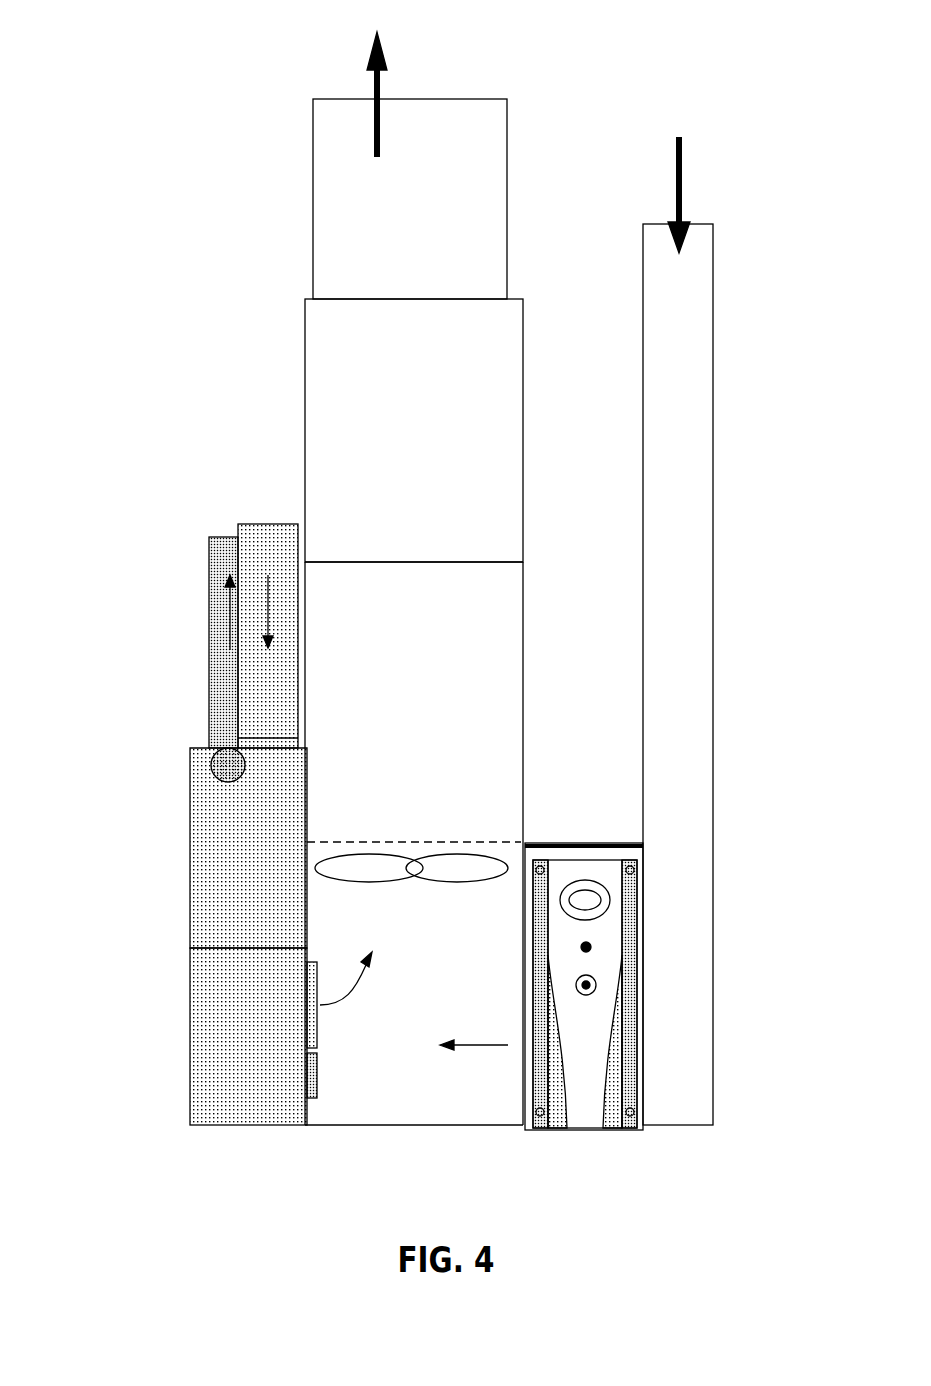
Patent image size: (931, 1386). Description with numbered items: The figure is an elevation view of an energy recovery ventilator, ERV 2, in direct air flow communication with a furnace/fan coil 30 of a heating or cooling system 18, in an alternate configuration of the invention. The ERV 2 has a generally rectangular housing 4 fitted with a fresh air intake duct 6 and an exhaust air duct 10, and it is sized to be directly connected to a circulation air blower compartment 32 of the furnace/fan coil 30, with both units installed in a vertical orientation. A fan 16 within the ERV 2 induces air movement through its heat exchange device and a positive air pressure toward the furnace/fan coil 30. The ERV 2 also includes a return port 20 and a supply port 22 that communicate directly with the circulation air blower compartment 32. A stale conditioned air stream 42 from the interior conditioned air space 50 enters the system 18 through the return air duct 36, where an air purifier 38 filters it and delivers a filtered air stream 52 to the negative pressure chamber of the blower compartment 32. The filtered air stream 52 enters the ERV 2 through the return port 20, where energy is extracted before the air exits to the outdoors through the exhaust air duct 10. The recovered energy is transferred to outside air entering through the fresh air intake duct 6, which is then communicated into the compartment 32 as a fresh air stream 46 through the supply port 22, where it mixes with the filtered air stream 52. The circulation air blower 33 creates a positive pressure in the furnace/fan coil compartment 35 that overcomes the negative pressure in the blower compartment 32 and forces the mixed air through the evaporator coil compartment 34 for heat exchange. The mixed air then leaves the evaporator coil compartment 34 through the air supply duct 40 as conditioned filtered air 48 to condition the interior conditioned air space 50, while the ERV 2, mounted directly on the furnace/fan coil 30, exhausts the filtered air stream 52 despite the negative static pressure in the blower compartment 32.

The ERV 2 is at (125, 782).
The housing 4 is at (192, 1010).
The fresh air intake duct 6 is at (273, 535).
The exhaust air duct 10 is at (215, 530).
The fan 16 is at (217, 760).
The heating or cooling system 18 is at (391, 400).
The return port 20 is at (307, 1087).
The supply port 22 is at (318, 972).
The furnace/fan coil 30 is at (448, 889).
The circulation air blower compartment 32 is at (418, 1097).
The circulation air blower 33 is at (483, 868).
The evaporator coil compartment 34 is at (513, 462).
The furnace/fan coil compartment 35 is at (467, 630).
The return air duct 36 is at (688, 467).
The air purifier 38 is at (582, 1087).
The air supply duct 40 is at (483, 208).
The stale conditioned air stream 42 is at (685, 175).
The fresh air stream 46 is at (348, 1008).
The conditioned filtered air 48 is at (373, 80).
The interior conditioned air space 50 is at (560, 84).
The filtered air stream 52 is at (480, 1048).